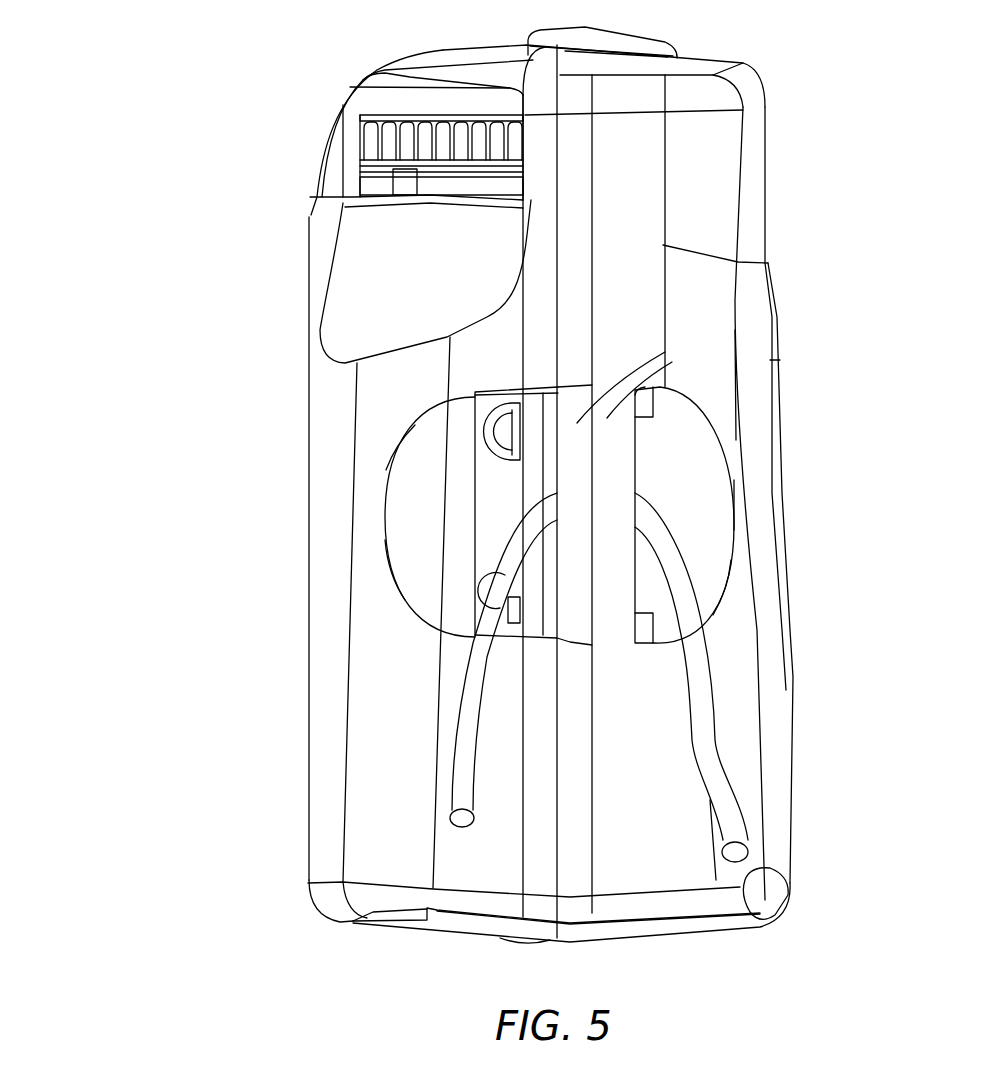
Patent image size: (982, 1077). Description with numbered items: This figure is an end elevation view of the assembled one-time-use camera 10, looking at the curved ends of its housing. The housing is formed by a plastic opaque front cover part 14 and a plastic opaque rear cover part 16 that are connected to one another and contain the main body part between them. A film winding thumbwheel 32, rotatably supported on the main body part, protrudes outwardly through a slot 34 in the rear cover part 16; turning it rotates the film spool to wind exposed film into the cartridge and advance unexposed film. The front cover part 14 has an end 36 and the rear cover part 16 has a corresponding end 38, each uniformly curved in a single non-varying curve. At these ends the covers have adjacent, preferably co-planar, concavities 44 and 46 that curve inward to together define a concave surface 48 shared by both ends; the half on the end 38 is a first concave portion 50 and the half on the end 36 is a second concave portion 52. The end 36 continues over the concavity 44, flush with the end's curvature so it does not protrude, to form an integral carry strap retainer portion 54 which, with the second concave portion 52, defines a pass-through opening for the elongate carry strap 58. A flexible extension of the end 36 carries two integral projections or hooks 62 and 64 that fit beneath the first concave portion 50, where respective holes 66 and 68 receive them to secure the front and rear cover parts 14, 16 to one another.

The one-time-use camera 10 is at (173, 283).
The front cover part 14 is at (765, 210).
The rear cover part 16 is at (312, 712).
The film winding thumbwheel 32 is at (397, 140).
The slot 34 is at (357, 172).
The end of the front cover part 36 is at (723, 310).
The end of the rear cover part 38 is at (367, 410).
The concavity of the front cover part 44 is at (727, 527).
The concavity of the rear cover part 46 is at (387, 527).
The concave surface 48 is at (400, 553).
The first concave portion 50 is at (390, 498).
The second concave portion 52 is at (718, 495).
The carry strap retainer portion 54 is at (665, 358).
The carry strap 58 is at (462, 827).
The projection or hook 62 is at (500, 417).
The projection or hook 64 is at (508, 613).
The hole 66 is at (487, 430).
The hole 68 is at (487, 587).